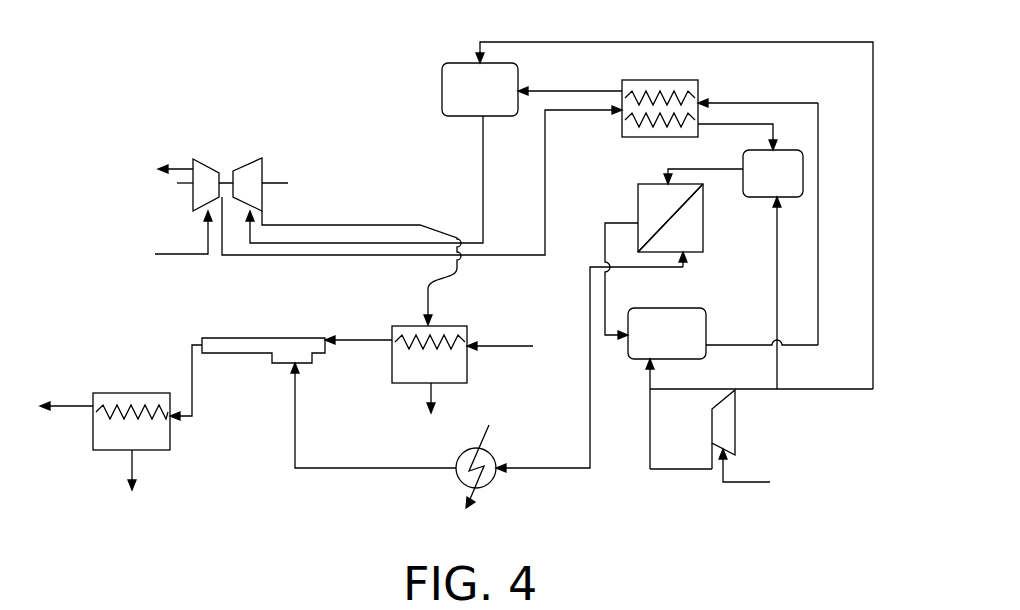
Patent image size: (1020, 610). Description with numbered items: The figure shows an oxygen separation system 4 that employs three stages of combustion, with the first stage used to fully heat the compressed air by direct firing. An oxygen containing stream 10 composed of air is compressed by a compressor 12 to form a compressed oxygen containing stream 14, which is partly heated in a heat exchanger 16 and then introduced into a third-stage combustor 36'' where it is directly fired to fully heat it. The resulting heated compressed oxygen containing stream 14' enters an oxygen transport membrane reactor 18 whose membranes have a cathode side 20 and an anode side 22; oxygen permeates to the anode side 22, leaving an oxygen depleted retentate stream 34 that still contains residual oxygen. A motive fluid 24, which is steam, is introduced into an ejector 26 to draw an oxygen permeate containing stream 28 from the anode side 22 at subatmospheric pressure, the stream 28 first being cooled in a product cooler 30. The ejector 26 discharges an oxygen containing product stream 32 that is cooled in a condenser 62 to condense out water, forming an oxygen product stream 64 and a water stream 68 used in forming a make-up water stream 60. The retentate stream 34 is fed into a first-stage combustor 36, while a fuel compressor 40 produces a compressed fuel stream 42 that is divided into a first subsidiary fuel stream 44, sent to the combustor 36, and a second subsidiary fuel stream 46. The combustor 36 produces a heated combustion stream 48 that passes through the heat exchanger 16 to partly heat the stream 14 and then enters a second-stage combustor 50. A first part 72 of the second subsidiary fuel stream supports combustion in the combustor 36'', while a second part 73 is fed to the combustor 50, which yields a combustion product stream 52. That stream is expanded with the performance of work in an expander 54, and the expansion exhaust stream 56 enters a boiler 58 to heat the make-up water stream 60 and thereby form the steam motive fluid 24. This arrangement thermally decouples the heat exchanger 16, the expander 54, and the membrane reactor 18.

The oxygen separation system 4 is at (366, 101).
The oxygen containing stream 10 is at (188, 255).
The compressor 12 is at (207, 176).
The compressed oxygen containing stream 14 is at (422, 206).
The heated compressed oxygen containing stream 14' is at (705, 193).
The heat exchanger 16 is at (668, 85).
The oxygen transport membrane reactor 18 is at (638, 198).
The cathode side 20 is at (648, 190).
The anode side 22 is at (703, 222).
The motive fluid 24 is at (353, 337).
The ejector 26 is at (248, 348).
The oxygen permeate containing stream 28 is at (592, 428).
The product cooler 30 is at (462, 488).
The oxygen containing product stream 32 is at (190, 363).
The retentate stream 34 is at (603, 240).
The combustor 36 is at (671, 318).
The combustor 36'' is at (803, 147).
The compressor 40 is at (728, 423).
The compressed fuel stream 42 is at (666, 471).
The first subsidiary fuel stream 44 is at (648, 384).
The second subsidiary fuel stream 46 is at (753, 393).
The heated combustion stream 48 is at (820, 250).
The combustor 50 is at (453, 77).
The combustion product stream 52 is at (482, 166).
The expander 54 is at (247, 168).
The expansion exhaust stream 56 is at (348, 224).
The boiler 58 is at (407, 377).
The make-up water stream 60 is at (513, 345).
The condenser 62 is at (103, 432).
The oxygen product stream 64 is at (70, 404).
The water stream 68 is at (135, 460).
The first part of the second subsidiary fuel stream 72 is at (775, 363).
The second part of the second subsidiary fuel stream 73 is at (875, 287).